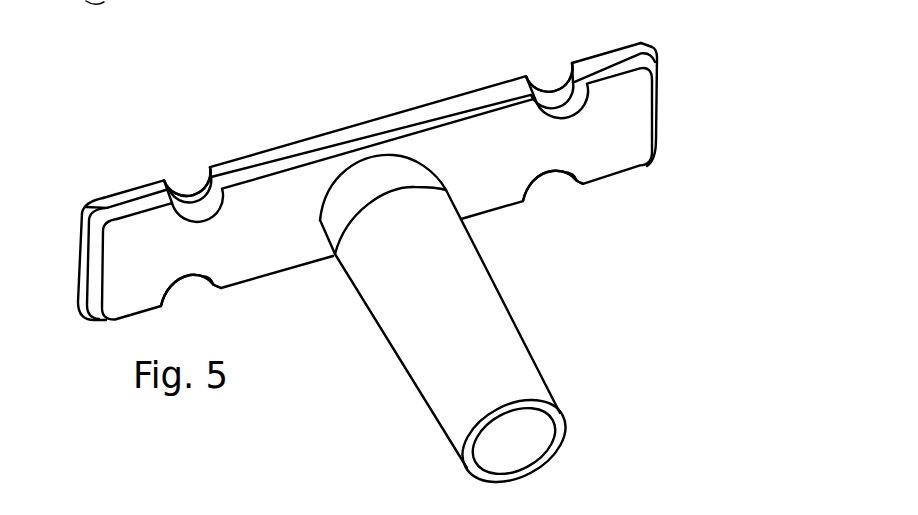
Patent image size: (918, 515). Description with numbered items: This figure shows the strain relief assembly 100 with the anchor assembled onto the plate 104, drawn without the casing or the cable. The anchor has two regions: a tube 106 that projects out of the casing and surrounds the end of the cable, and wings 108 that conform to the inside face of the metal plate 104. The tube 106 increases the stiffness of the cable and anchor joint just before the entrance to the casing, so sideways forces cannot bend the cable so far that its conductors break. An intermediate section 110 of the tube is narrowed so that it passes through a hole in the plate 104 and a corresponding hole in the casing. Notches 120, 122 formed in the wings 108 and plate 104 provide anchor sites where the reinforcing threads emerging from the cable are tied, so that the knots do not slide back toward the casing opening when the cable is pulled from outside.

The strain relief assembly 100 is at (712, 324).
The plate 104 is at (636, 144).
The tube 106 is at (417, 338).
The wings 108 is at (113, 198).
The intermediate section 110 is at (405, 175).
The notches 120 is at (188, 194).
The notches 122 is at (194, 277).